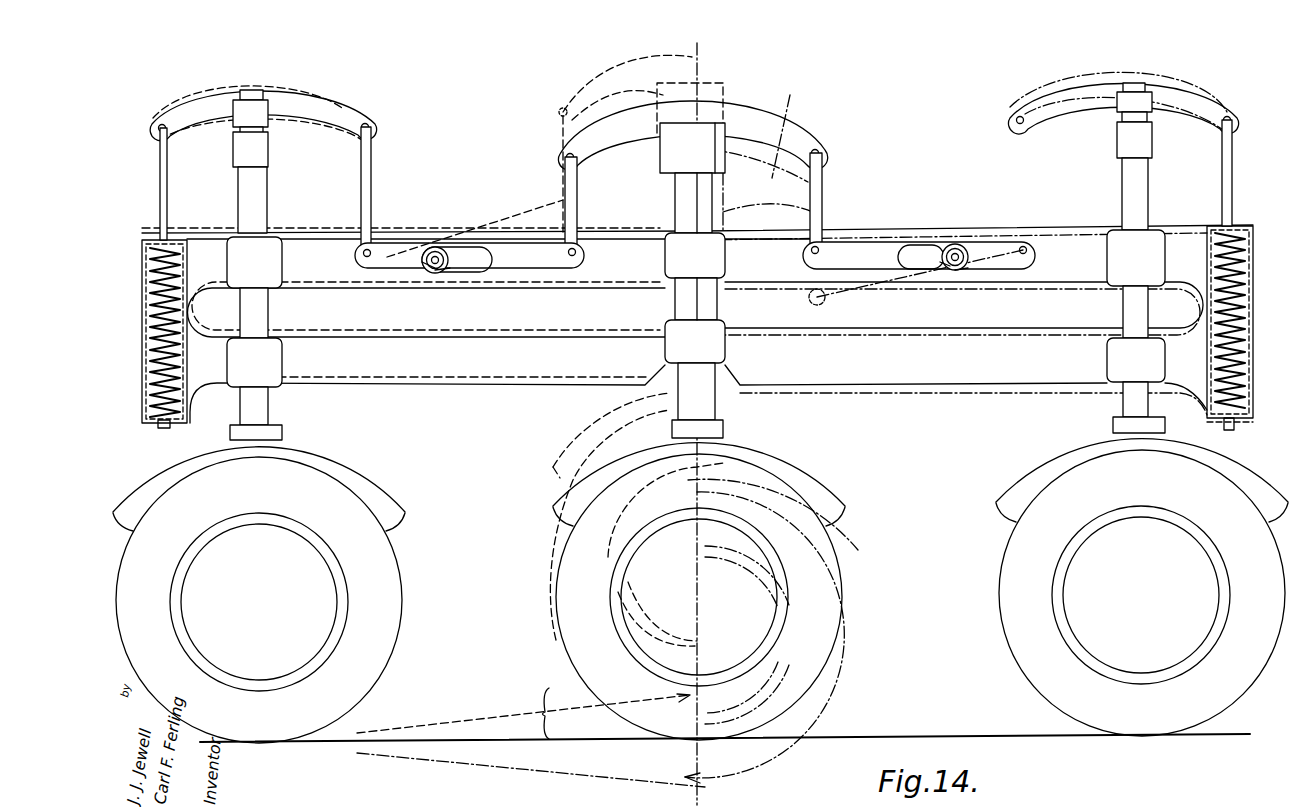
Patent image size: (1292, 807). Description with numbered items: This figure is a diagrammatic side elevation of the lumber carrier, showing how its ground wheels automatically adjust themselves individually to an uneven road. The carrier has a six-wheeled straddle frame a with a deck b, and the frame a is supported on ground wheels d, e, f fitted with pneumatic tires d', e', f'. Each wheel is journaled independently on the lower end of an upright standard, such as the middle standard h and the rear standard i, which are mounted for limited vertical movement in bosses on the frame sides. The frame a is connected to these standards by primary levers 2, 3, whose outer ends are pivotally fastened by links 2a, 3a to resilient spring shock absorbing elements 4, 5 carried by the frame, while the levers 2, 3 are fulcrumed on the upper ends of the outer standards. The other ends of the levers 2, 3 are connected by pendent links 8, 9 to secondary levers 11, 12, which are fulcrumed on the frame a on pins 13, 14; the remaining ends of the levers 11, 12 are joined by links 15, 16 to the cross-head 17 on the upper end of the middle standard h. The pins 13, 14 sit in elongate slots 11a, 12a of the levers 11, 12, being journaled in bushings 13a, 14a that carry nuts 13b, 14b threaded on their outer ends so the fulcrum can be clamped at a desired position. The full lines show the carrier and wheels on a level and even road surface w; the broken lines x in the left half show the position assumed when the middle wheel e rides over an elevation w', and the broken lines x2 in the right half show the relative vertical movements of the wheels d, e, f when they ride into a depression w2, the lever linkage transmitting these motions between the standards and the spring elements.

The primary lever 2 is at (336, 110).
The link 2a is at (160, 185).
The primary lever 3 is at (1084, 95).
The link 3a is at (1232, 163).
The resilient spring shock absorbing element 4 is at (142, 277).
The resilient spring shock absorbing element 5 is at (1247, 257).
The pendent link 8 is at (372, 179).
The pendent link 9 is at (267, 201).
The secondary lever 11 is at (392, 243).
The elongate slot 11a is at (472, 273).
The secondary lever 12 is at (863, 252).
The elongate slot 12a is at (920, 255).
The pin 13 is at (441, 244).
The bushing 13a is at (430, 270).
The nut 13b is at (443, 276).
The pin 14 is at (955, 244).
The bushing 14a is at (928, 264).
The nut 14b is at (963, 272).
The link 15 is at (565, 172).
The link 16 is at (822, 173).
The cross-head 17 is at (607, 75).
The straddle frame a is at (556, 397).
The deck b is at (612, 232).
The ground wheel d is at (275, 595).
The pneumatic tire d' is at (306, 602).
The ground wheel e is at (679, 588).
The pneumatic tire e' is at (649, 593).
The ground wheel f is at (1121, 587).
The pneumatic tire f' is at (1093, 595).
The upright standard h is at (688, 298).
The upright standard i is at (1130, 405).
The broken lines x is at (353, 332).
The broken lines x2 is at (1052, 402).
The level road surface w is at (538, 707).
The elevation w' is at (523, 706).
The depression w2 is at (577, 773).